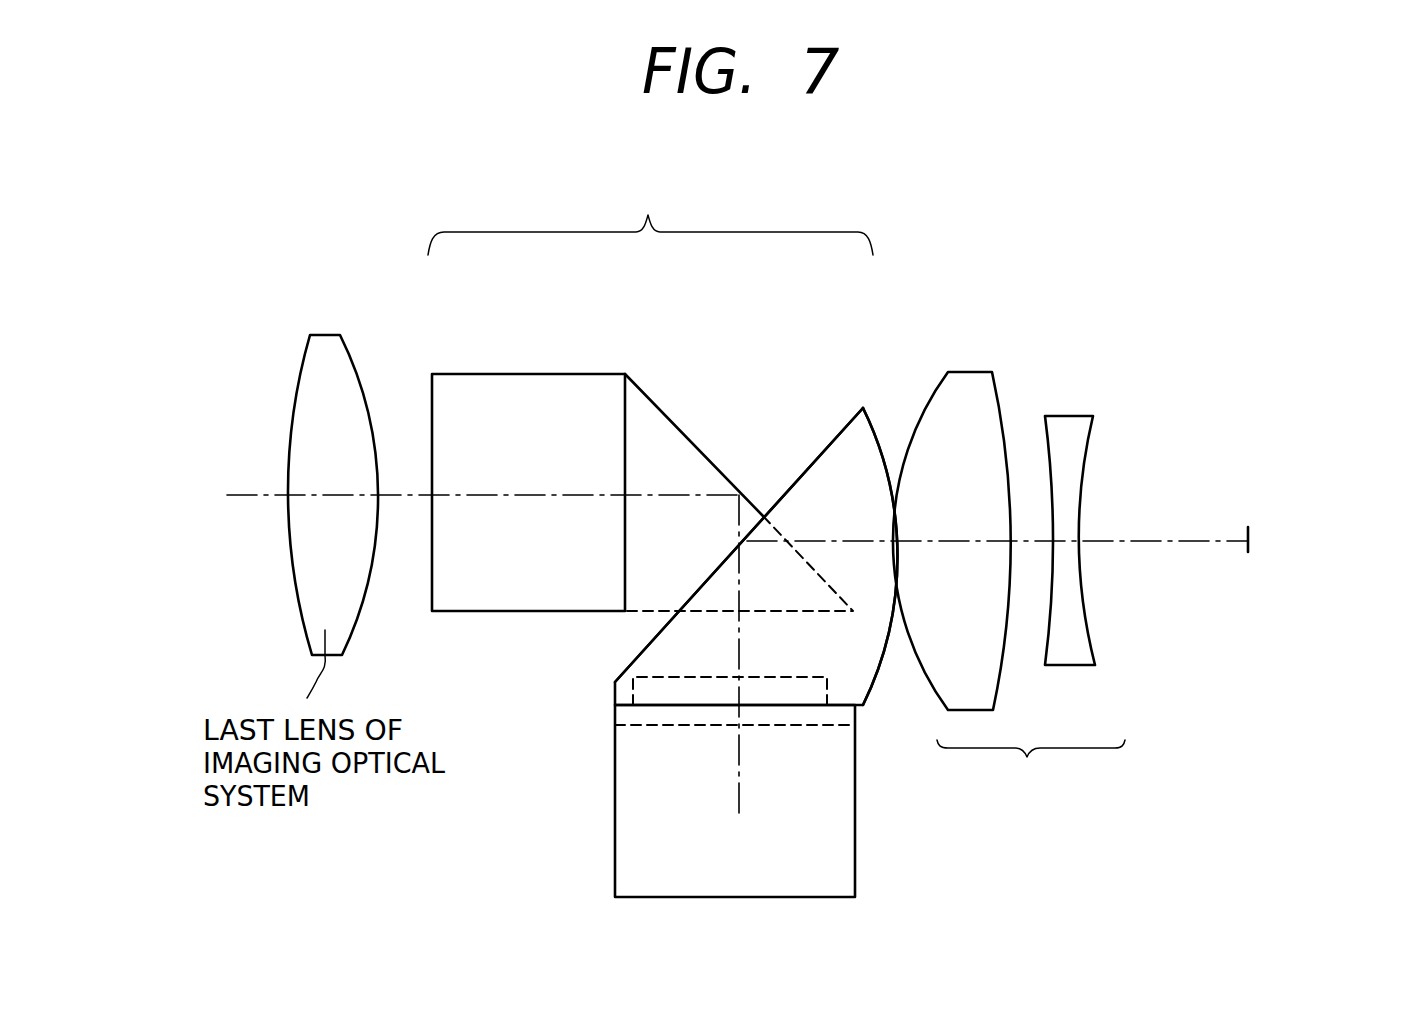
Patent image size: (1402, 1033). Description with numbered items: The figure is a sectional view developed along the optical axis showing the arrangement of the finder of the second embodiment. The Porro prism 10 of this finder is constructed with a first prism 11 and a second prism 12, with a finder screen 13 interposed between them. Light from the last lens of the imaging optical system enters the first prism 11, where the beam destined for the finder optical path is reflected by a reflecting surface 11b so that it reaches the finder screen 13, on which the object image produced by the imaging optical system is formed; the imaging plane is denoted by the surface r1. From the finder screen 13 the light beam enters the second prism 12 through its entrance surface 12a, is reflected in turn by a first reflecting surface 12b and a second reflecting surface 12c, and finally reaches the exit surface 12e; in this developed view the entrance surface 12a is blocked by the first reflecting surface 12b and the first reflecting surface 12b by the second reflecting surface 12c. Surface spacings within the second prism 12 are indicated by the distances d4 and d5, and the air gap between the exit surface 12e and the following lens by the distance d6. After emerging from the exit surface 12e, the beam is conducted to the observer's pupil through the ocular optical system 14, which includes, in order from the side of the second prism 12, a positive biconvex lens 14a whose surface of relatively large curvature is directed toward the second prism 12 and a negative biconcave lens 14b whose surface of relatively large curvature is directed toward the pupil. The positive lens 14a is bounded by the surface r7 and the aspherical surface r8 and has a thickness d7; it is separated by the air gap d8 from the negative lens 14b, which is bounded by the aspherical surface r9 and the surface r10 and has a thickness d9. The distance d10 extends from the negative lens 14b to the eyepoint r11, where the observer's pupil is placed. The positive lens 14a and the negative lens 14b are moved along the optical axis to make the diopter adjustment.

The Porro prism 10 is at (650, 220).
The first prism 11 is at (552, 352).
The reflecting surface 11b is at (678, 430).
The second prism 12 is at (748, 355).
The entrance surface 12a is at (637, 726).
The first reflecting surface 12b is at (800, 470).
The second reflecting surface 12c is at (842, 858).
The exit surface 12e is at (870, 430).
The finder screen 13 is at (657, 675).
The ocular optical system 14 is at (1031, 770).
The positive biconvex lens 14a is at (968, 392).
The negative biconcave lens 14b is at (1068, 433).
The imaging plane r1 is at (657, 703).
The first surface of positive lens r7 is at (918, 430).
The aspherical surface r8 is at (1001, 418).
The aspherical surface r9 is at (1044, 453).
The pupil-side surface of negative lens r10 is at (1087, 468).
The eyepoint r11 is at (1250, 535).
The surface spacing d4 is at (739, 653).
The surface spacing d5 is at (840, 540).
The surface spacing d6 is at (898, 548).
The lens thickness d7 is at (957, 543).
The surface spacing d8 is at (1027, 543).
The lens thickness d9 is at (1065, 543).
The eye relief d10 is at (1153, 543).